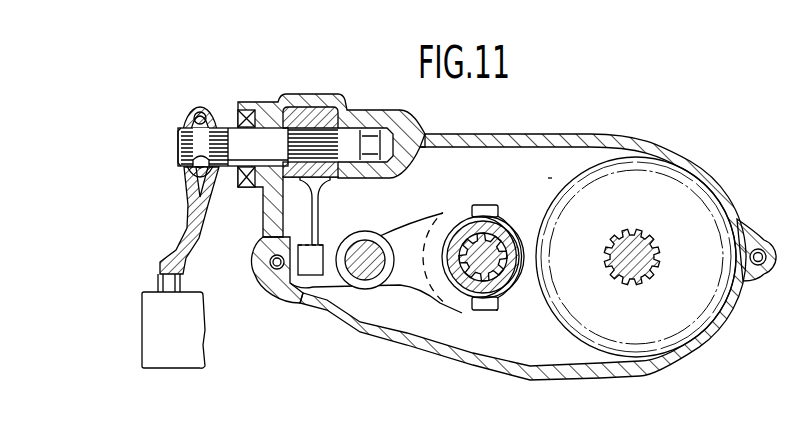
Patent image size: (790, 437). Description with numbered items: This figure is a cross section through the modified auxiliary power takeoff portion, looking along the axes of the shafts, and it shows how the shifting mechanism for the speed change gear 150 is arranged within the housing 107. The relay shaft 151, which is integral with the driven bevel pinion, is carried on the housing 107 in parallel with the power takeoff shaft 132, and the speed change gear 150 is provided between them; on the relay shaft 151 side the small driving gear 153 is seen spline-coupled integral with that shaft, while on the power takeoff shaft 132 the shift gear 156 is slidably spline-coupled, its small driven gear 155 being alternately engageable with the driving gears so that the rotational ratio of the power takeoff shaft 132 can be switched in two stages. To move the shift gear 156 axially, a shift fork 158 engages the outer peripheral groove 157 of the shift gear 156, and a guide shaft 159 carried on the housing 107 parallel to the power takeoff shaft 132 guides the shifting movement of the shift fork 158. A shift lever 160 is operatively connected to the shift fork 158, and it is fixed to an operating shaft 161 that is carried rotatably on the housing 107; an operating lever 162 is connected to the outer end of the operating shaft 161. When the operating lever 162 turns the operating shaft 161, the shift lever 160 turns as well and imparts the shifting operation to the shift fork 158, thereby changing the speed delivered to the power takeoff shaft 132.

The housing 107 is at (595, 140).
The power takeoff shaft 132 is at (473, 297).
The speed change gear 150 is at (550, 177).
The relay shaft 151 is at (634, 244).
The small driving gear 153 is at (686, 177).
The small driven gear 155 is at (515, 217).
The shift gear 156 is at (519, 311).
The outer peripheral groove 157 is at (517, 237).
The shift fork 158 is at (412, 238).
The guide shaft 159 is at (370, 245).
The shift lever 160 is at (308, 208).
The operating shaft 161 is at (238, 133).
The operating lever 162 is at (147, 317).